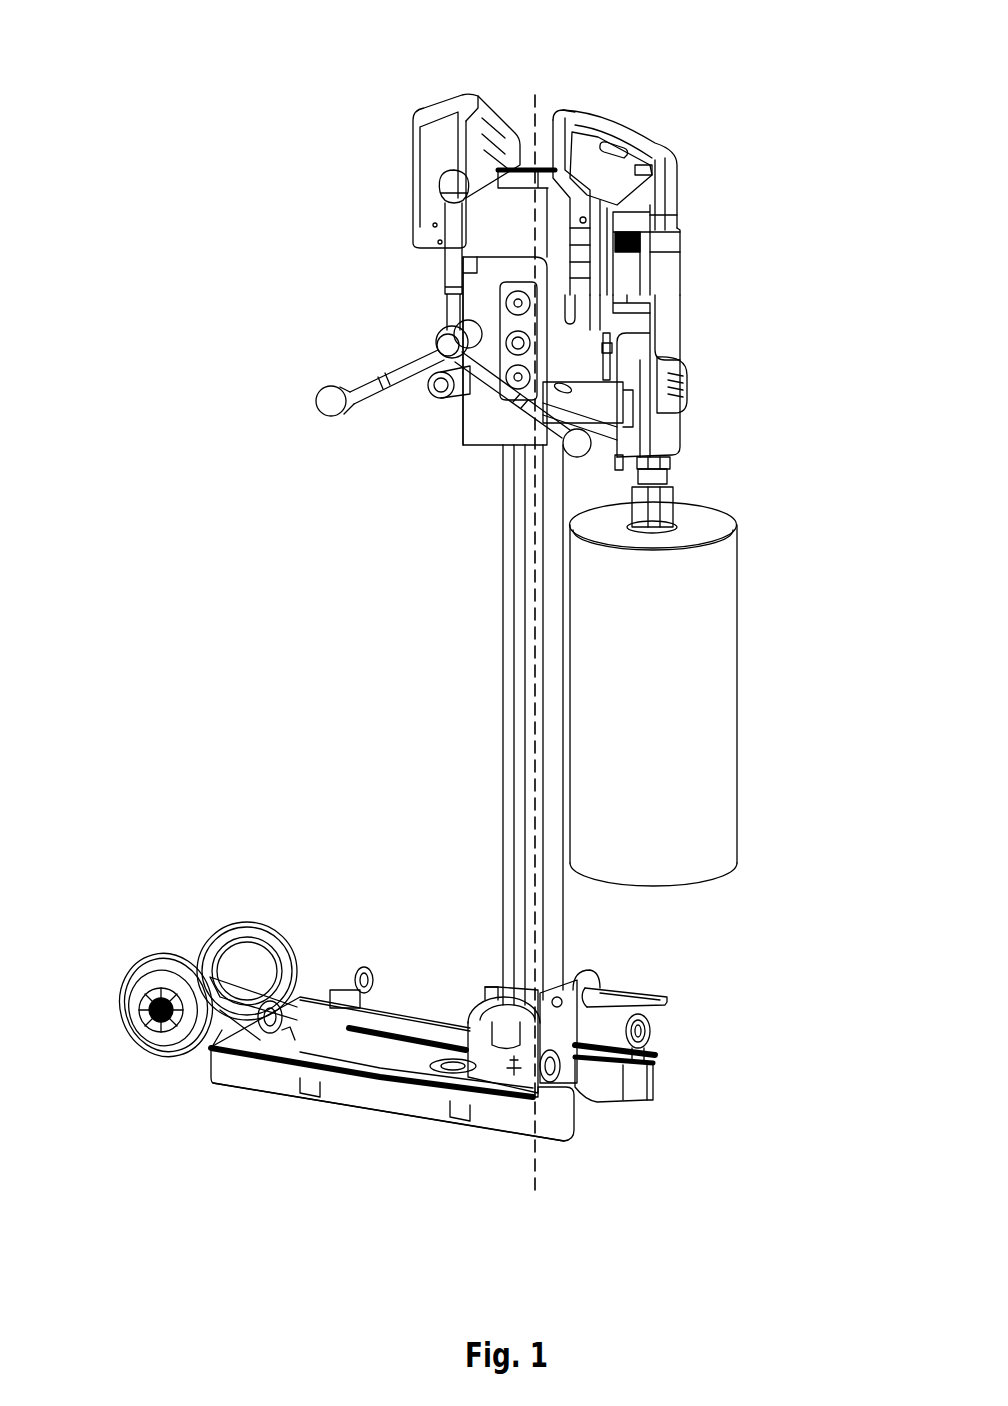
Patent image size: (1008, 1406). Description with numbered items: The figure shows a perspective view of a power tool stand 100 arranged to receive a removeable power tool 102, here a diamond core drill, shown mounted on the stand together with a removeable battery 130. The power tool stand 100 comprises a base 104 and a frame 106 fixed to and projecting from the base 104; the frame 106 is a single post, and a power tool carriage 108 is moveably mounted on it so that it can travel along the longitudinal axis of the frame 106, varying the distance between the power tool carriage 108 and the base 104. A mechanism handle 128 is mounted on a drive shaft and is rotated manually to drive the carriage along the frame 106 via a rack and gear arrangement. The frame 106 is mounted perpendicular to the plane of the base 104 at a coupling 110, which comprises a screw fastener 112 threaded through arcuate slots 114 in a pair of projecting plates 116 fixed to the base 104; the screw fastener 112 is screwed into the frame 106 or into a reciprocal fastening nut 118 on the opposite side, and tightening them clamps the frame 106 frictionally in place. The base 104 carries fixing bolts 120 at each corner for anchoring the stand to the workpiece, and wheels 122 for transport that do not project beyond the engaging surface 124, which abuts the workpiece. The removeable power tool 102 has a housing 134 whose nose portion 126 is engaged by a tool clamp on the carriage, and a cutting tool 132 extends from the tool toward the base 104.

The power tool stand 100 is at (292, 700).
The removeable power tool 102 is at (612, 133).
The base 104 is at (245, 1086).
The frame 106 is at (503, 588).
The power tool carriage 108 is at (500, 245).
The coupling 110 is at (580, 978).
The screw fastener 112 is at (667, 992).
The arcuate slots 114 is at (470, 1018).
The projecting plates 116 is at (478, 1052).
The reciprocal fastening nut 118 is at (505, 1003).
The fixing bolts 120 is at (650, 1037).
The wheels 122 is at (168, 962).
The engaging surface 124 is at (323, 1085).
The nose portion 126 is at (682, 440).
The mechanism handle 128 is at (320, 400).
The removeable battery 130 is at (415, 158).
The cutting tool 132 is at (731, 690).
The housing 134 is at (678, 277).